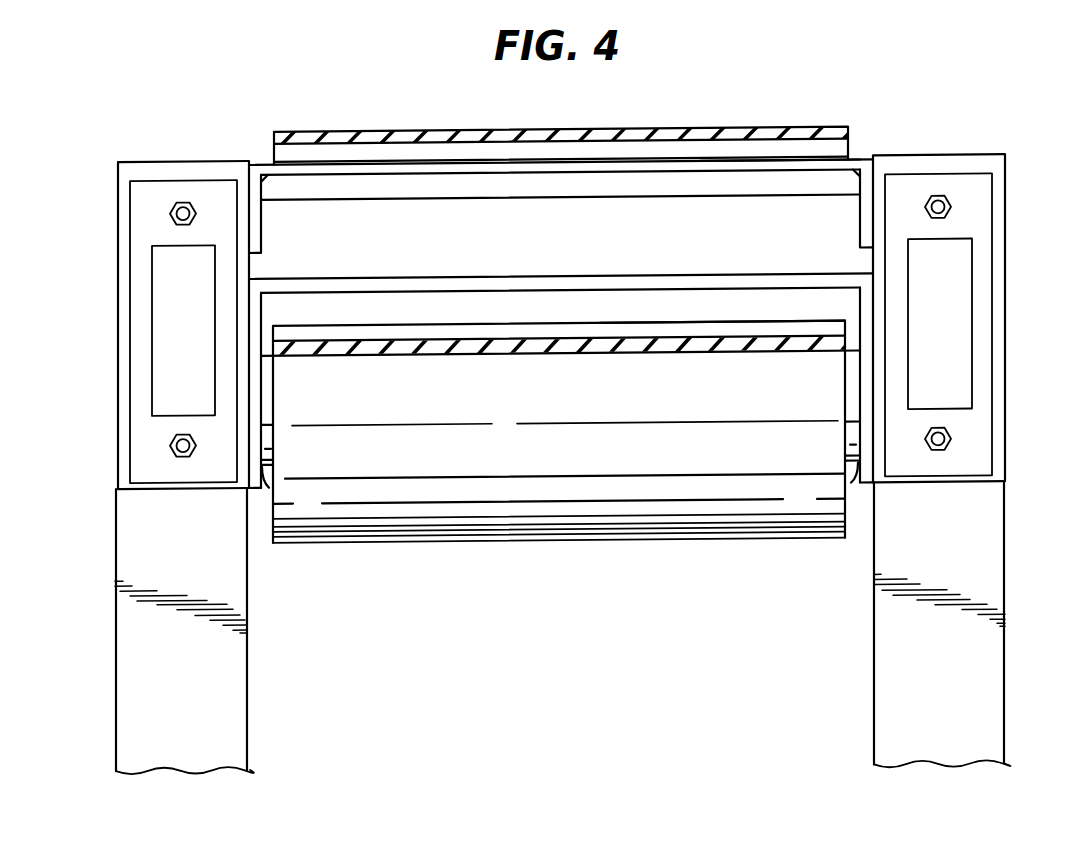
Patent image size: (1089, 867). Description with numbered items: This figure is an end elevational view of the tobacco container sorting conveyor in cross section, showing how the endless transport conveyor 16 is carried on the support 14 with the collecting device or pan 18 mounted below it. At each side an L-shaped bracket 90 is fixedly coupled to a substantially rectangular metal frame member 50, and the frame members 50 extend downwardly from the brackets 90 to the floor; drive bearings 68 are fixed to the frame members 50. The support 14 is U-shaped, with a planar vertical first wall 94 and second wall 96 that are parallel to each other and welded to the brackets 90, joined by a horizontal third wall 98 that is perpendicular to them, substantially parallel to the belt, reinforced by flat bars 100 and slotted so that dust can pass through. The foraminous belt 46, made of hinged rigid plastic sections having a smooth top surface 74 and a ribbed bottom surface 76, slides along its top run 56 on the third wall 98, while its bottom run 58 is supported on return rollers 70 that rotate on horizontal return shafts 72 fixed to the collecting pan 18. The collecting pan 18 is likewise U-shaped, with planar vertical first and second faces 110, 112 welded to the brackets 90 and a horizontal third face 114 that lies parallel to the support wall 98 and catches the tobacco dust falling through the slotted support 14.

The support 14 is at (584, 292).
The endless transport conveyor 16 is at (560, 457).
The collecting device or pan 18 is at (609, 279).
The belt 46 is at (561, 123).
The frame member 50 is at (247, 630).
The top run 56 is at (612, 132).
The bottom run 58 is at (600, 359).
The drive bearings 68 is at (152, 330).
The return rollers 70 is at (623, 546).
The return shafts 72 is at (275, 489).
The smooth top surface 74 is at (752, 132).
The ribbed bottom surface 76 is at (775, 166).
The brackets 90 is at (561, 292).
The first wall 94 is at (262, 226).
The second wall 96 is at (860, 219).
The third wall 98 is at (405, 176).
The flat bars 100 is at (479, 201).
The first face 110 is at (261, 393).
The second face 112 is at (861, 393).
The third face 114 is at (497, 295).